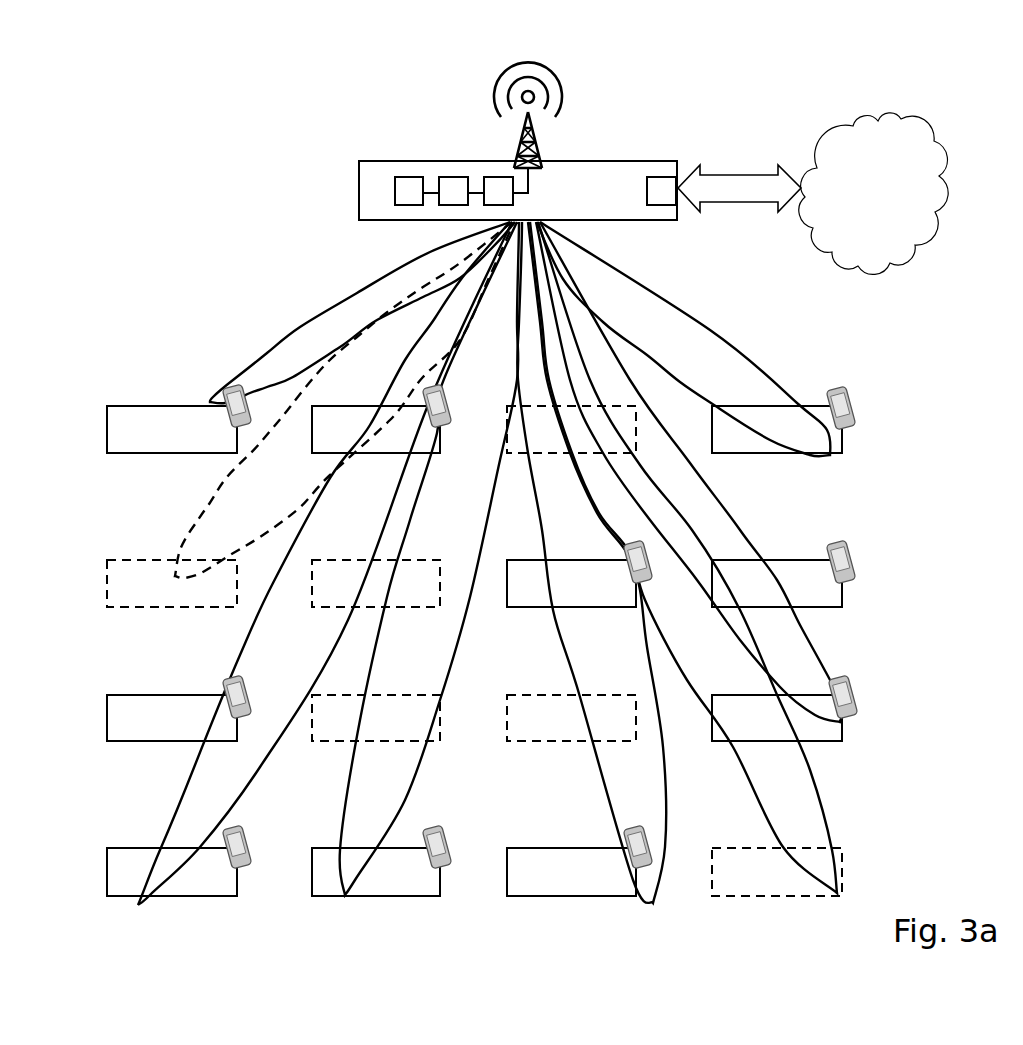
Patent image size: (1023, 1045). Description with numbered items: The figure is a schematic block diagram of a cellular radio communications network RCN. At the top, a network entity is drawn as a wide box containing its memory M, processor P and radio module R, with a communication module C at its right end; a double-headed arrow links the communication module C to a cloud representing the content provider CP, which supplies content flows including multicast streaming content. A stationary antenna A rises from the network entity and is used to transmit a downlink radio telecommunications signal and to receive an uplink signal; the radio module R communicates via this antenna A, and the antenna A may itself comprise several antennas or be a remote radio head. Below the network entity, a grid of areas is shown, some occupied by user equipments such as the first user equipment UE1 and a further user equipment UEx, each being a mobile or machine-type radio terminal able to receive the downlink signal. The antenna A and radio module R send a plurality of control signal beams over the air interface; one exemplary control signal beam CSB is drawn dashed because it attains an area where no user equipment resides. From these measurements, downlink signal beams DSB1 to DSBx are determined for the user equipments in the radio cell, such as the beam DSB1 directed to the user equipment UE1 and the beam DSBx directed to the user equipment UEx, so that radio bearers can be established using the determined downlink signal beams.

The memory M is at (398, 183).
The processor P is at (448, 183).
The radio module R is at (493, 183).
The antenna A is at (540, 149).
The communication module C is at (660, 177).
The cellular radio communications network RCN is at (733, 99).
The content provider CP is at (887, 120).
The downlink signal beam DSB1 is at (285, 338).
The user equipment UE1 is at (172, 407).
The control signal beam CSB is at (174, 553).
The downlink signal beam DSBx is at (760, 537).
The user equipment UEx is at (840, 728).